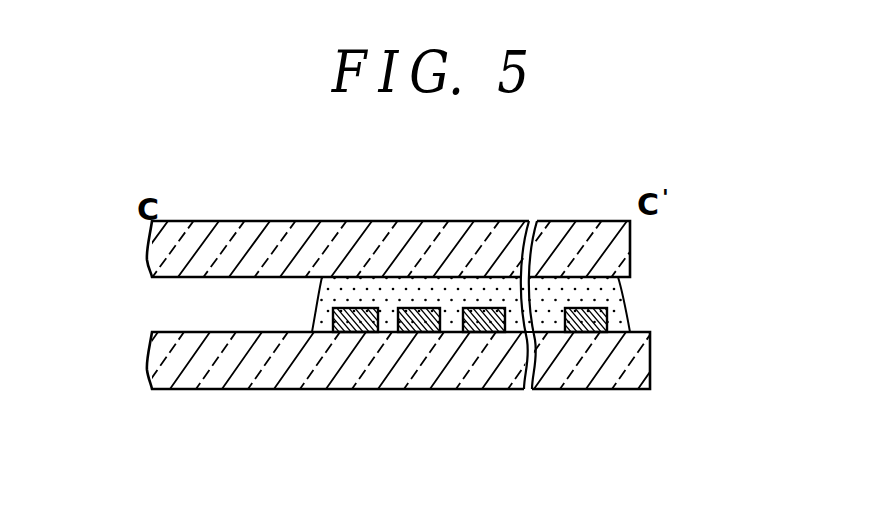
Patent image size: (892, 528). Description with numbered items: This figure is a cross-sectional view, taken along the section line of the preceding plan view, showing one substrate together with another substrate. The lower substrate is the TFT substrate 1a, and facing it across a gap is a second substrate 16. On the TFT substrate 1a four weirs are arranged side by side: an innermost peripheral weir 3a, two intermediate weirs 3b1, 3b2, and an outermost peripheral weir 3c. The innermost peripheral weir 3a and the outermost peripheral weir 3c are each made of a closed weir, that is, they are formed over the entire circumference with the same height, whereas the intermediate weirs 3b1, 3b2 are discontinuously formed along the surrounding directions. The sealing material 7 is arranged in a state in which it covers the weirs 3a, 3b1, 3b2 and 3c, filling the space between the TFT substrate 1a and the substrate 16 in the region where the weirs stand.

The TFT substrate 1a is at (622, 372).
The second substrate 16 is at (587, 221).
The sealing material 7 is at (397, 288).
The innermost peripheral weir 3a is at (353, 325).
The intermediate weir 3b1 is at (417, 325).
The intermediate weir 3b2 is at (478, 325).
The outermost peripheral weir 3c is at (573, 325).